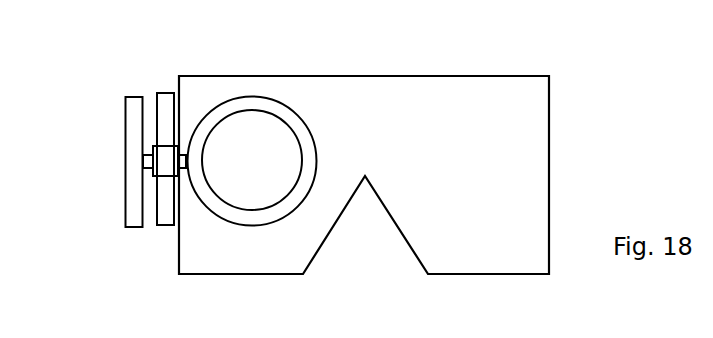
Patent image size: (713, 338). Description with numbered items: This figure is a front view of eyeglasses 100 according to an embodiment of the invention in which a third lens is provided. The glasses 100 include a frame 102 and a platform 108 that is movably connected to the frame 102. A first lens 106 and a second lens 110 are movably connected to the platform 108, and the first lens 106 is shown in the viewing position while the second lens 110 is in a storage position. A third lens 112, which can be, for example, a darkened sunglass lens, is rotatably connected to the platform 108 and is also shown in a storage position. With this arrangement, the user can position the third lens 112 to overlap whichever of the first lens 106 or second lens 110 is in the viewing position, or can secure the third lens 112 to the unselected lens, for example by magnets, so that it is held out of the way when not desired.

The eyeglasses 100 is at (607, 86).
The frame 102 is at (503, 77).
The first lens 106 is at (312, 134).
The platform 108 is at (158, 177).
The second lens 110 is at (168, 93).
The third lens 112 is at (125, 140).